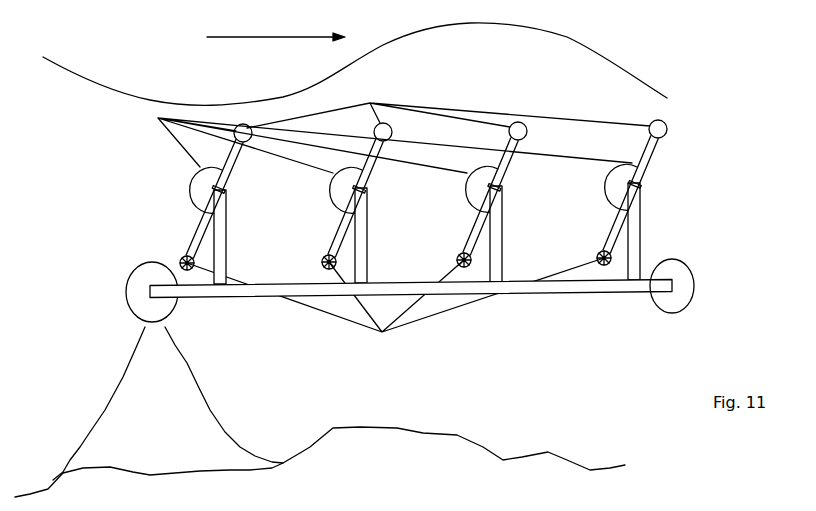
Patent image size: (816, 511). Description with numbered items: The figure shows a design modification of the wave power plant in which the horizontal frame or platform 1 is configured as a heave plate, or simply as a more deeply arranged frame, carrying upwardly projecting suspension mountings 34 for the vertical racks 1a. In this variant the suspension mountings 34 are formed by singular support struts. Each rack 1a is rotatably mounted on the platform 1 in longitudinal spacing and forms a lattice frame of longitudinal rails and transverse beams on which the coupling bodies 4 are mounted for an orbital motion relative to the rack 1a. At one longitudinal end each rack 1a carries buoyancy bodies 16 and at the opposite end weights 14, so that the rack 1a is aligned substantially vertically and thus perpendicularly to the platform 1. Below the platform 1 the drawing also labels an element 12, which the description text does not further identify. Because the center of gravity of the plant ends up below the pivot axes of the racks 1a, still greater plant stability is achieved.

The coupling body 4 is at (381, 141).
The buoyancy body 16 is at (370, 104).
The rack 1a is at (655, 150).
The suspension mounting 34 is at (638, 235).
The platform 1 is at (587, 291).
The weight 14 is at (395, 318).
The seabed anchor mound 12 is at (187, 385).